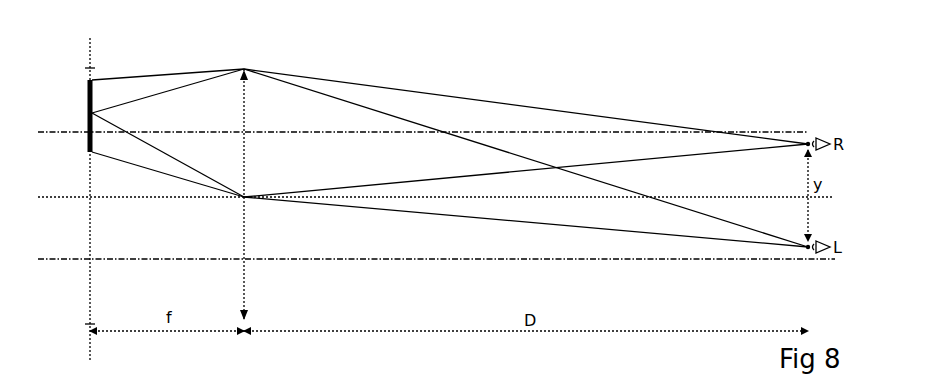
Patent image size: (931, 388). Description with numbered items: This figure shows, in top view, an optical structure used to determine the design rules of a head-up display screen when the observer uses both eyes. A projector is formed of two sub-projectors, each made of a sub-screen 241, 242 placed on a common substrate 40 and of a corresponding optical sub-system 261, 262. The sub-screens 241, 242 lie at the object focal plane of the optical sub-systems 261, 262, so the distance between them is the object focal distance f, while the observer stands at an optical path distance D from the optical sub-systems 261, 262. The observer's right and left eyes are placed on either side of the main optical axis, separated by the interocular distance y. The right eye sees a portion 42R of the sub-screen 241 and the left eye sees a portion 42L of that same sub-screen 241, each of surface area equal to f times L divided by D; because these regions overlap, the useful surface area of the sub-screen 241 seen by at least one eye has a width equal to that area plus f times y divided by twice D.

The substrate 40 is at (88, 56).
The sub-screen 241 is at (88, 68).
The sub-screen 242 is at (90, 281).
The portion of sub-screen seen by left eye 42L is at (87, 107).
The portion of sub-screen seen by right eye 42R is at (93, 113).
The optical sub-system 261 is at (243, 102).
The optical sub-system 262 is at (243, 290).